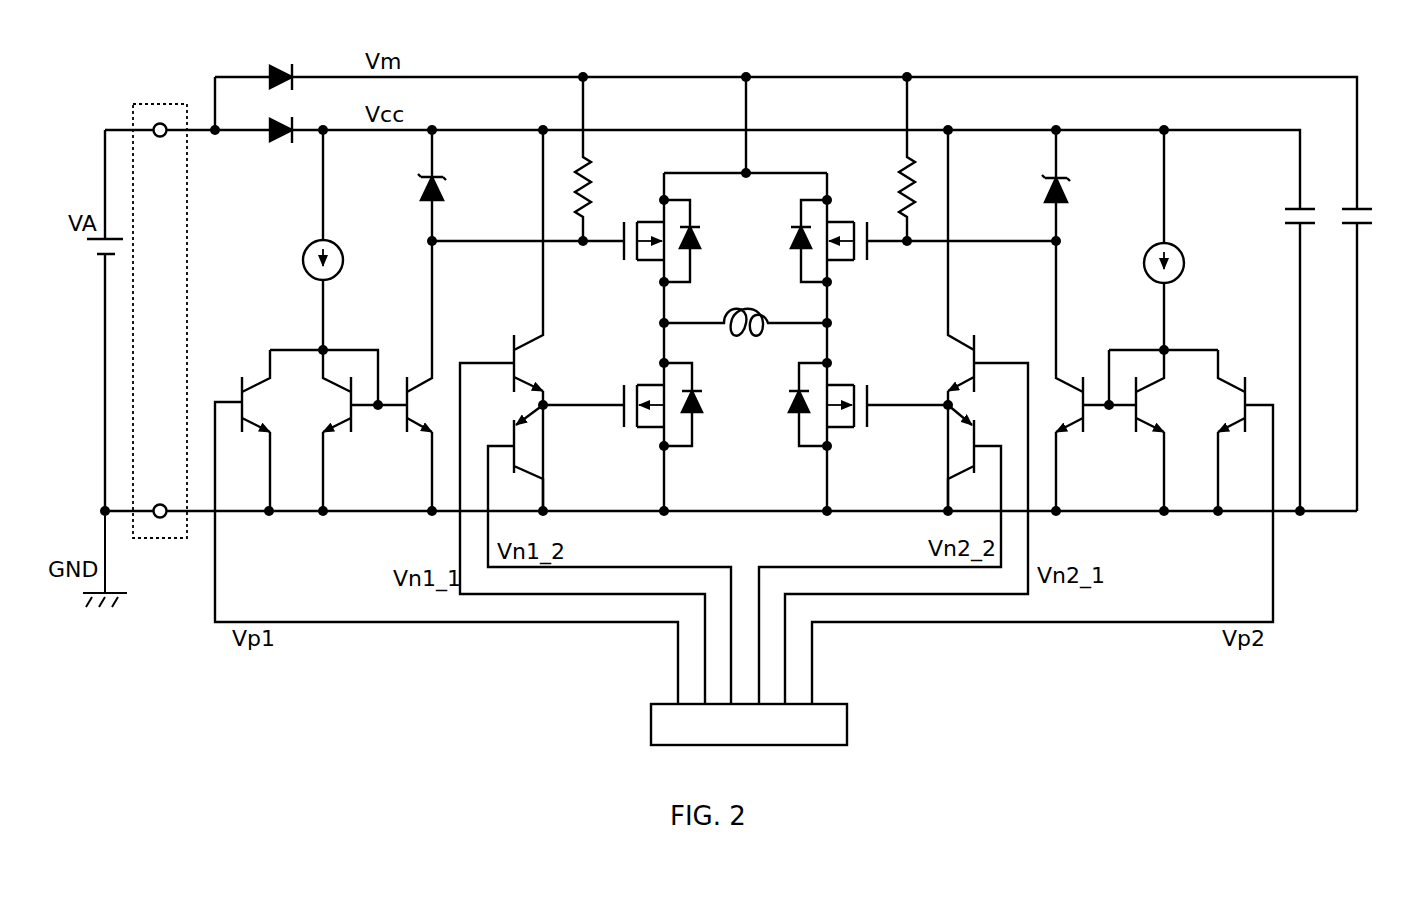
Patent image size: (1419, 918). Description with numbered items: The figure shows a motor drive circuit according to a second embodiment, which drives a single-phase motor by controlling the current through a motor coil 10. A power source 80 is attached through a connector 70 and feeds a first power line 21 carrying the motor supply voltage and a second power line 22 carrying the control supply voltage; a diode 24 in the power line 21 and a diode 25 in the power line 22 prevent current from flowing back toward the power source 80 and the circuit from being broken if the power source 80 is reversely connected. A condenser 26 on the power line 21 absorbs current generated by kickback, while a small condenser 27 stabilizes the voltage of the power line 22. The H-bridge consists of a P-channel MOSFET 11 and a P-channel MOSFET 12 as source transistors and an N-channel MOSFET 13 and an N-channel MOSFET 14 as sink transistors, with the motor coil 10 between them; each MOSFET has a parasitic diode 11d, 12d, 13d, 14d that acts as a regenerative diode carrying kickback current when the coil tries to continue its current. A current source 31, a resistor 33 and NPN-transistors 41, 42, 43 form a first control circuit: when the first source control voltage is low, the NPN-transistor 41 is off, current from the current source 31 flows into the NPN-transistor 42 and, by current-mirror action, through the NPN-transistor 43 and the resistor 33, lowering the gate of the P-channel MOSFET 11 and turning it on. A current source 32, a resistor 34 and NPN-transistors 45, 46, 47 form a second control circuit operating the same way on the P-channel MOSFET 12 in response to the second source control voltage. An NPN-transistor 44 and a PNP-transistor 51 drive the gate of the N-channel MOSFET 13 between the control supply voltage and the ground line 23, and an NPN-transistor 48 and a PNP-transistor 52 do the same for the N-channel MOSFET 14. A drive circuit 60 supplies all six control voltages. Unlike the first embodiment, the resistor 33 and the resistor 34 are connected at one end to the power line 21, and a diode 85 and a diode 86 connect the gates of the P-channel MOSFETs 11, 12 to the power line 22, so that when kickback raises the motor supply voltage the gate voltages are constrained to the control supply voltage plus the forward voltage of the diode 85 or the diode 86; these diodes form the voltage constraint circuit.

The motor coil 10 is at (750, 337).
The P-channel MOSFET 11 is at (641, 264).
The parasitic diode 11d is at (703, 250).
The P-channel MOSFET 12 is at (849, 264).
The parasitic diode 12d is at (792, 241).
The N-channel MOSFET 13 is at (650, 447).
The parasitic diode 13d is at (697, 418).
The N-channel MOSFET 14 is at (840, 447).
The parasitic diode 14d is at (796, 418).
The power line 21 is at (440, 76).
The power line 22 is at (472, 130).
The ground line 23 is at (296, 517).
The diode 24 is at (282, 68).
The diode 25 is at (282, 142).
The condenser 26 is at (1362, 226).
The condenser 27 is at (1293, 226).
The current source 31 is at (340, 250).
The current source 32 is at (1150, 248).
The resistor 33 is at (593, 185).
The resistor 34 is at (900, 186).
The NPN-transistor 41 is at (256, 374).
The NPN-transistor 42 is at (331, 427).
The NPN-transistor 43 is at (416, 374).
The NPN-transistor 44 is at (530, 382).
The NPN-transistor 45 is at (1238, 387).
The NPN-transistor 46 is at (1150, 427).
The NPN-transistor 47 is at (1072, 388).
The NPN-transistor 48 is at (952, 387).
The PNP-transistor 51 is at (525, 460).
The PNP-transistor 52 is at (958, 466).
The drive circuit 60 is at (848, 716).
The connector 70 is at (163, 104).
The power source 80 is at (99, 258).
The diode 85 is at (443, 190).
The diode 86 is at (1068, 192).